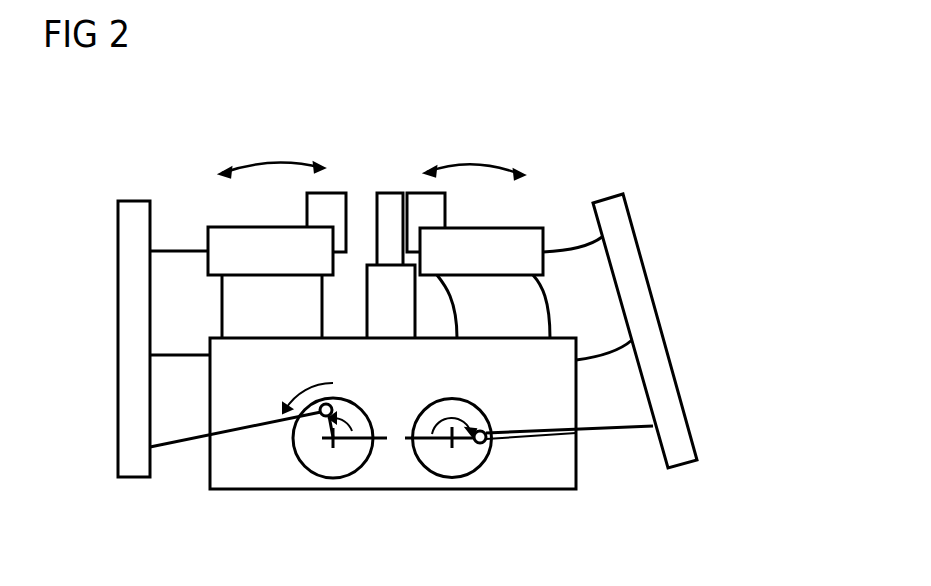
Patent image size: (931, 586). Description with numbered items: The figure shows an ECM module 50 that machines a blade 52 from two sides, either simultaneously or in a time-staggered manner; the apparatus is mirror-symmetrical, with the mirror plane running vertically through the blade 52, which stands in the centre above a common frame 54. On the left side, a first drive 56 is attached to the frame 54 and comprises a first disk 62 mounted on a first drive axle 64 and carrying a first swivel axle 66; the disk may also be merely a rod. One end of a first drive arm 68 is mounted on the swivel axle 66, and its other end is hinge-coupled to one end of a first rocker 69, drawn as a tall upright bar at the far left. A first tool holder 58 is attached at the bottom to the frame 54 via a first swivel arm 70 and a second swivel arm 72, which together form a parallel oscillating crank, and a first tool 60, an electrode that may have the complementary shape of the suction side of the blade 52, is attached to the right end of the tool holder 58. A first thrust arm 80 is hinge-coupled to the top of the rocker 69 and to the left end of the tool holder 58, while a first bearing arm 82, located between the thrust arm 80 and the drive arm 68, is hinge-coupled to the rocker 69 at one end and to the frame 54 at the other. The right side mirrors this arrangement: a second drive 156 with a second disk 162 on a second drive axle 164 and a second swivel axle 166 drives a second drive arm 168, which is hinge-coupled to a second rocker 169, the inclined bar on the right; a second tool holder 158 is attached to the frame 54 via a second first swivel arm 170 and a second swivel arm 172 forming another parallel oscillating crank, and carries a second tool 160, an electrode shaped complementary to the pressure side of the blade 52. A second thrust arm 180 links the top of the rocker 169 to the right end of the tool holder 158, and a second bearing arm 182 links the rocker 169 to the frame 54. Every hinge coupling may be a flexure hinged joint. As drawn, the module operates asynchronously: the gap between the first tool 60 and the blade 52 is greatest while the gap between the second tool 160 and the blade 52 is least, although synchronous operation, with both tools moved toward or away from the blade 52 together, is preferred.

The ECM module 50 is at (487, 97).
The blade 52 is at (395, 203).
The frame 54 is at (578, 473).
The first drive 56 is at (325, 468).
The first tool holder 58 is at (270, 251).
The first tool 60 is at (327, 202).
The first disk 62 is at (347, 470).
The first drive axle 64 is at (328, 442).
The first swivel axle 66 is at (331, 403).
The first drive arm 68 is at (183, 447).
The first rocker 69 is at (130, 372).
The first swivel arm 70 is at (222, 302).
The second swivel arm 72 is at (322, 297).
The first thrust arm 80 is at (175, 248).
The first bearing arm 82 is at (177, 357).
The second drive 156 is at (452, 473).
The second tool holder 158 is at (481, 251).
The second tool 160 is at (438, 200).
The second disk 162 is at (473, 465).
The second drive axle 164 is at (450, 442).
The second swivel axle 166 is at (485, 431).
The second drive arm 168 is at (605, 427).
The second rocker 169 is at (650, 327).
The second first swivel arm 170 is at (550, 308).
The second swivel arm 172 is at (457, 305).
The second thrust arm 180 is at (568, 252).
The second bearing arm 182 is at (613, 350).